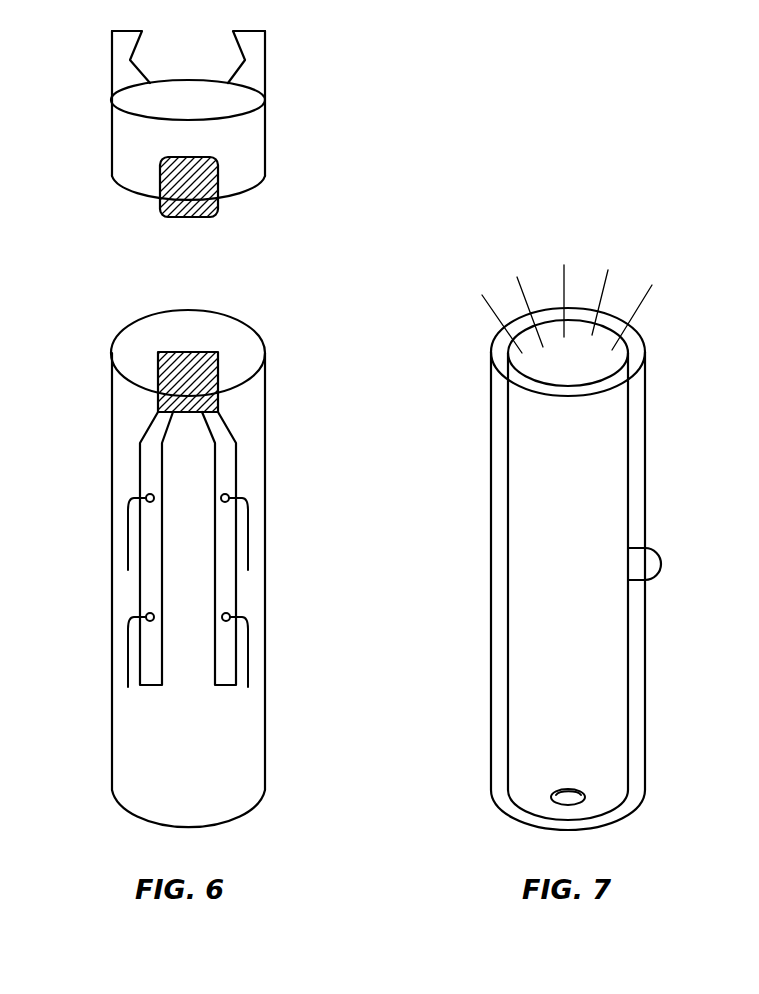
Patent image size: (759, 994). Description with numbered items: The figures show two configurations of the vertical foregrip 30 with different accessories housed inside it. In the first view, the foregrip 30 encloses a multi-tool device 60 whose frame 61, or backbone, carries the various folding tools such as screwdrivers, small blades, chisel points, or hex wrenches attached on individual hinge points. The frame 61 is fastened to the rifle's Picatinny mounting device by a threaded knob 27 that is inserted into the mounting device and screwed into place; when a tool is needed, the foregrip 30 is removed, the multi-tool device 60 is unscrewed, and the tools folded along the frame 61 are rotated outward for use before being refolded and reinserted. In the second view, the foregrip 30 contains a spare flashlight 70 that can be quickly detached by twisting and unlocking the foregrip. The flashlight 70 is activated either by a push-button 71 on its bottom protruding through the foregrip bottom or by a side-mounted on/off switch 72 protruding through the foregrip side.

In FIG. 6, the threaded knob 27 is at (188, 356).
In FIG. 6, the foregrip 30 is at (265, 597).
In FIG. 7, the foregrip 30 is at (647, 665).
In FIG. 6, the multi-tool device 60 is at (218, 430).
In FIG. 6, the frame 61 is at (150, 677).
In FIG. 7, the flashlight 70 is at (607, 465).
In FIG. 7, the push-button 71 is at (568, 800).
In FIG. 7, the side-mounted on/off switch 72 is at (658, 560).